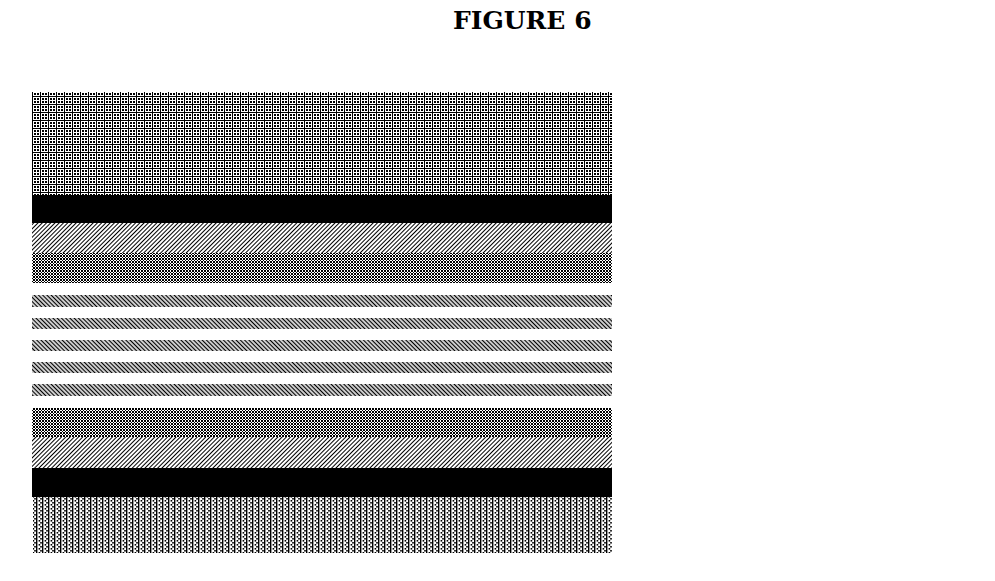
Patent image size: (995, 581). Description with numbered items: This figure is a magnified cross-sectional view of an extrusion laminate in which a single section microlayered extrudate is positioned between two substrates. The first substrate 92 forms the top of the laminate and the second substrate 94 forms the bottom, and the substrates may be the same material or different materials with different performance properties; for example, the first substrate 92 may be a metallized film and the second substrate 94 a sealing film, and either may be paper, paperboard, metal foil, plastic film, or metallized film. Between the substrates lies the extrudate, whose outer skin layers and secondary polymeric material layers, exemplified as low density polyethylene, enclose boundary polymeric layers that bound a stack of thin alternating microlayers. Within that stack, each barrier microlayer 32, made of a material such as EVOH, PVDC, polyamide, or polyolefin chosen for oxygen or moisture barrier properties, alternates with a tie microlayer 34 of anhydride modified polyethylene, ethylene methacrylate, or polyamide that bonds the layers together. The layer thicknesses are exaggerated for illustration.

The first substrate 92 is at (638, 115).
The barrier microlayer 32 is at (638, 283).
The tie microlayer 34 is at (638, 316).
The second substrate 94 is at (638, 520).